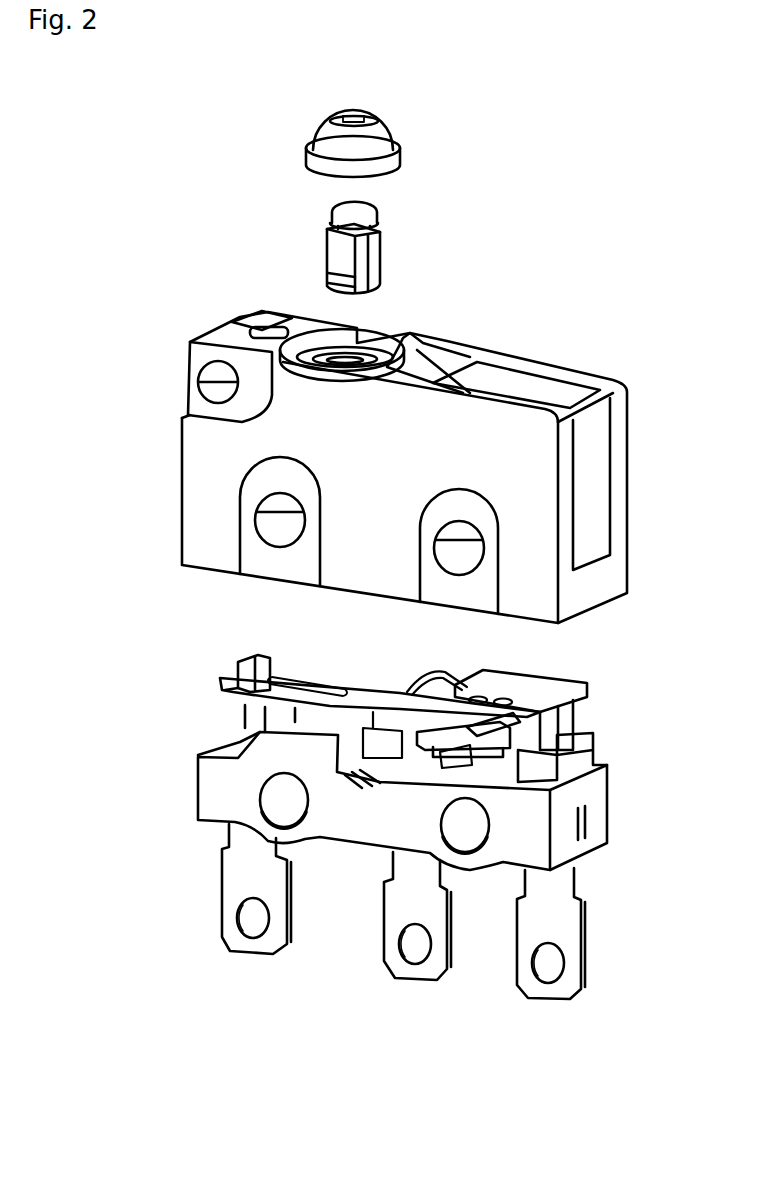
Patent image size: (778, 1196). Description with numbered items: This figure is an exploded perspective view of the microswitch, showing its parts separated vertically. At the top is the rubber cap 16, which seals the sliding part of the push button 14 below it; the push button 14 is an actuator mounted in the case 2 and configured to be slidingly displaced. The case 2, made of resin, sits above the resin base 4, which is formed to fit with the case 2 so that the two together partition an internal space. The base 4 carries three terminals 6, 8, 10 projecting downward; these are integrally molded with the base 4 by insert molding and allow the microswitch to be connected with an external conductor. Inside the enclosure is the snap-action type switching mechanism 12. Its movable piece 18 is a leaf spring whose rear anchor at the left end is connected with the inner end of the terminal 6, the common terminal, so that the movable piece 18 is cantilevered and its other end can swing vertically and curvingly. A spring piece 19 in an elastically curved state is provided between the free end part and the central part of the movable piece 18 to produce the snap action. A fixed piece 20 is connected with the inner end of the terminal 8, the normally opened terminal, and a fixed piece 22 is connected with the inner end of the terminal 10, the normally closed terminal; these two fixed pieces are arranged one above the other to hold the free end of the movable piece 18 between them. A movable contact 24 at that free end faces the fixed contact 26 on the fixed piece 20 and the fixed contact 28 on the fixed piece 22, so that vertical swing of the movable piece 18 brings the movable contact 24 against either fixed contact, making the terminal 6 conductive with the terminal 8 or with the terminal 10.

The case 2 is at (629, 489).
The base 4 is at (600, 813).
The terminal 6 is at (251, 957).
The terminal 8 is at (411, 984).
The terminal 10 is at (546, 1002).
The snap-action type switching mechanism 12 is at (361, 665).
The push button 14 is at (383, 241).
The rubber cap 16 is at (381, 127).
The movable piece 18 is at (310, 668).
The spring piece 19 is at (425, 674).
The fixed piece 20 is at (473, 765).
The fixed piece 22 is at (570, 676).
The movable contact 24 is at (472, 683).
The fixed contact 26 is at (532, 730).
The fixed contact 28 is at (501, 688).